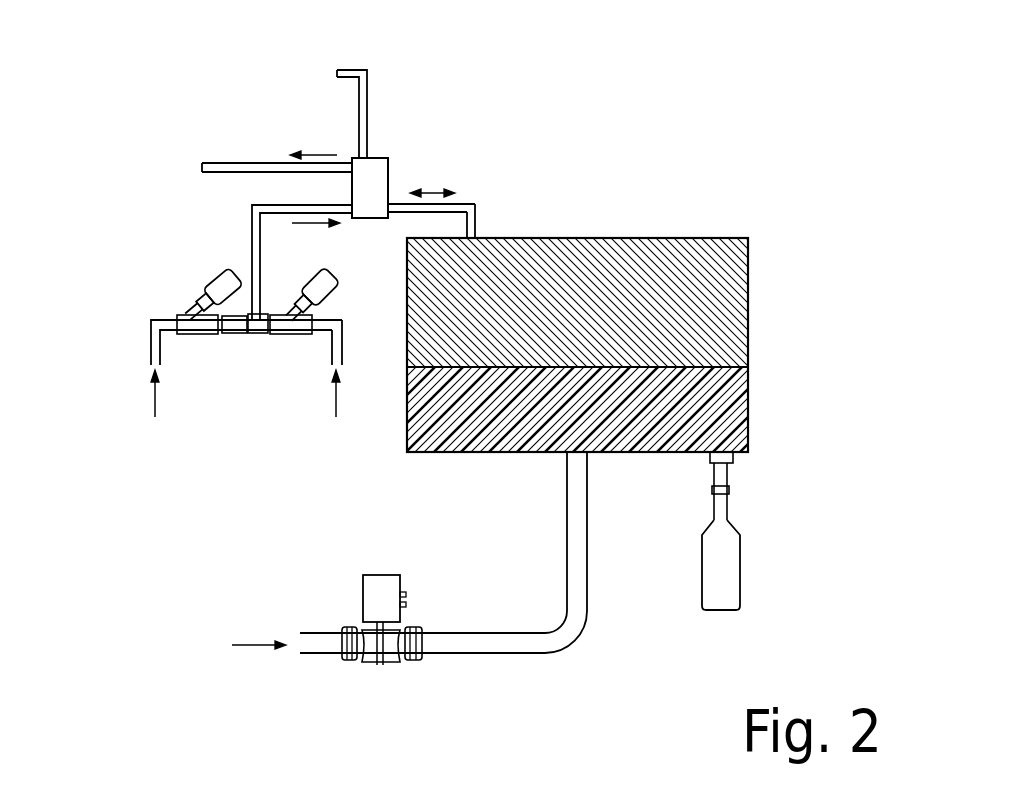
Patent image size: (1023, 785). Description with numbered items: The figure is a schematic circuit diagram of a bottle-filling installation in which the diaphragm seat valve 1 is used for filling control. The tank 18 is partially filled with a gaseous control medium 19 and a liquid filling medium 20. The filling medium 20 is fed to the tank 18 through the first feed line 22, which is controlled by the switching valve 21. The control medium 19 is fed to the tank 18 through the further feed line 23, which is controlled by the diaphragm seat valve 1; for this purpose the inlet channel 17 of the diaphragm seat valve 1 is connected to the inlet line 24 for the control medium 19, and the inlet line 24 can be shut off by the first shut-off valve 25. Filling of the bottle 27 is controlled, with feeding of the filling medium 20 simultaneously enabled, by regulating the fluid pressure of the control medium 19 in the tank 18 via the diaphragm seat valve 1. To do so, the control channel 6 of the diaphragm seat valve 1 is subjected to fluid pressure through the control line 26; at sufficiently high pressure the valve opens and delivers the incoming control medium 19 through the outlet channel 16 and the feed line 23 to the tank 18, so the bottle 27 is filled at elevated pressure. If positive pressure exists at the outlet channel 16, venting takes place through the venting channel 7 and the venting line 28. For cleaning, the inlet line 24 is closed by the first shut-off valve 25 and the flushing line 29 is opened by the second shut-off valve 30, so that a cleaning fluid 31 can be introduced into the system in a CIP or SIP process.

The diaphragm seat valve 1 is at (390, 160).
The control channel 6 is at (385, 157).
The venting channel 7 is at (347, 153).
The outlet channel 16 is at (390, 200).
The inlet channel 17 is at (350, 205).
The tank 18 is at (738, 237).
The control medium 19 is at (670, 302).
The filling medium 20 is at (750, 398).
The switching valve 21 is at (383, 575).
The first feed line 22 is at (460, 655).
The feed line 23 is at (472, 232).
The inlet line 24 is at (148, 347).
The first shut-off valve 25 is at (216, 277).
The control line 26 is at (366, 83).
The bottle 27 is at (742, 560).
The venting line 28 is at (226, 163).
The flushing line 29 is at (327, 347).
The second shut-off valve 30 is at (332, 274).
The cleaning fluid 31 is at (333, 412).